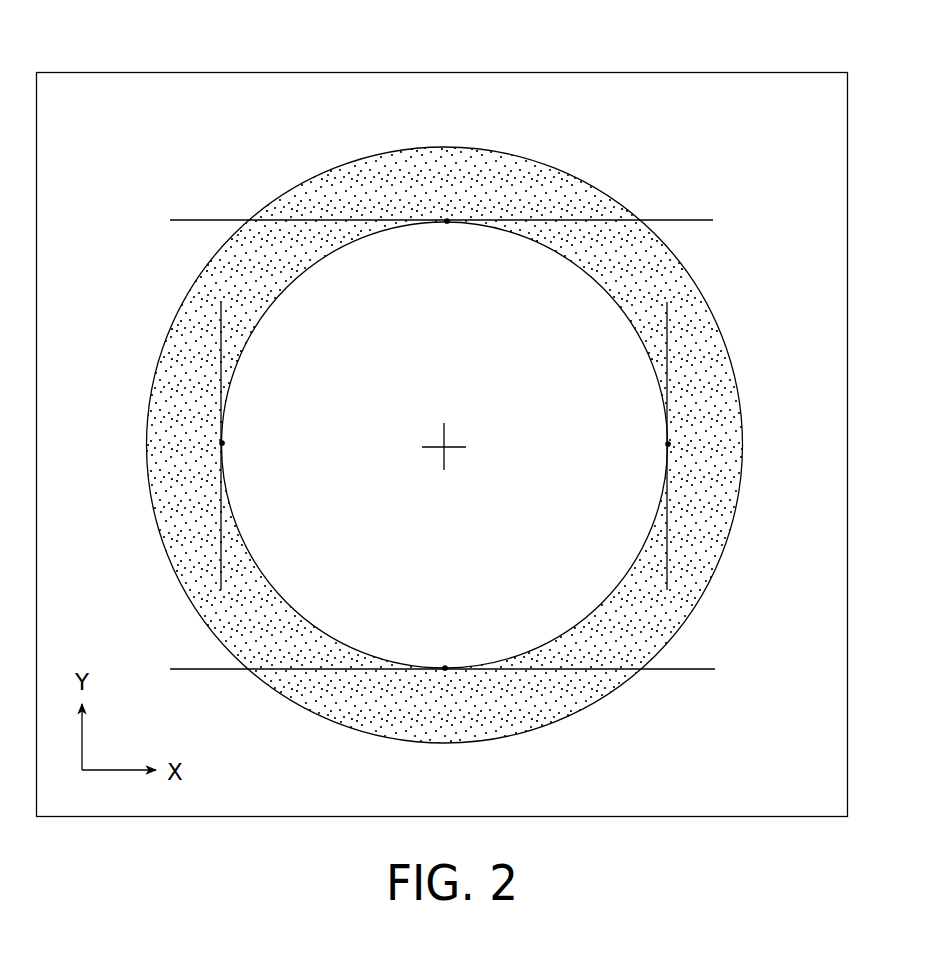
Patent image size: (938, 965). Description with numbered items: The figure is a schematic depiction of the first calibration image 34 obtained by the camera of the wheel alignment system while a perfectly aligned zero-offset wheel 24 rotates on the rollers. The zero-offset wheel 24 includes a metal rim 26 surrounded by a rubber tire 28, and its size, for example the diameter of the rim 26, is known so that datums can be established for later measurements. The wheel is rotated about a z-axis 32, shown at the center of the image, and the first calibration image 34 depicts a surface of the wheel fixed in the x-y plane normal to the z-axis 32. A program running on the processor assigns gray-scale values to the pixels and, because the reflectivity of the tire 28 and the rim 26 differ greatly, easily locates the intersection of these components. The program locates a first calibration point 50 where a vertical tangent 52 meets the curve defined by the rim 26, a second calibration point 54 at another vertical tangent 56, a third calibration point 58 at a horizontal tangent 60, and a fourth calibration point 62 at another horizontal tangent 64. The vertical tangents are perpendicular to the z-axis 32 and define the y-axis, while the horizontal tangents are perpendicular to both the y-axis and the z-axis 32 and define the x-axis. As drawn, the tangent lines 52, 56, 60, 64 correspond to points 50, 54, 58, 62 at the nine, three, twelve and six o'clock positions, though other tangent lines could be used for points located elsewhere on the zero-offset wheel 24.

The zero-offset wheel 24 is at (478, 415).
The rim 26 is at (587, 298).
The tire 28 is at (712, 363).
The z-axis 32 is at (445, 447).
The first calibration image 34 is at (740, 59).
The first calibration point 50 is at (224, 443).
The vertical tangent 52 is at (219, 338).
The second calibration point 54 is at (666, 444).
The vertical tangent 56 is at (668, 555).
The third calibration point 58 is at (447, 223).
The horizontal tangent 60 is at (693, 220).
The fourth calibration point 62 is at (445, 666).
The horizontal tangent 64 is at (680, 670).